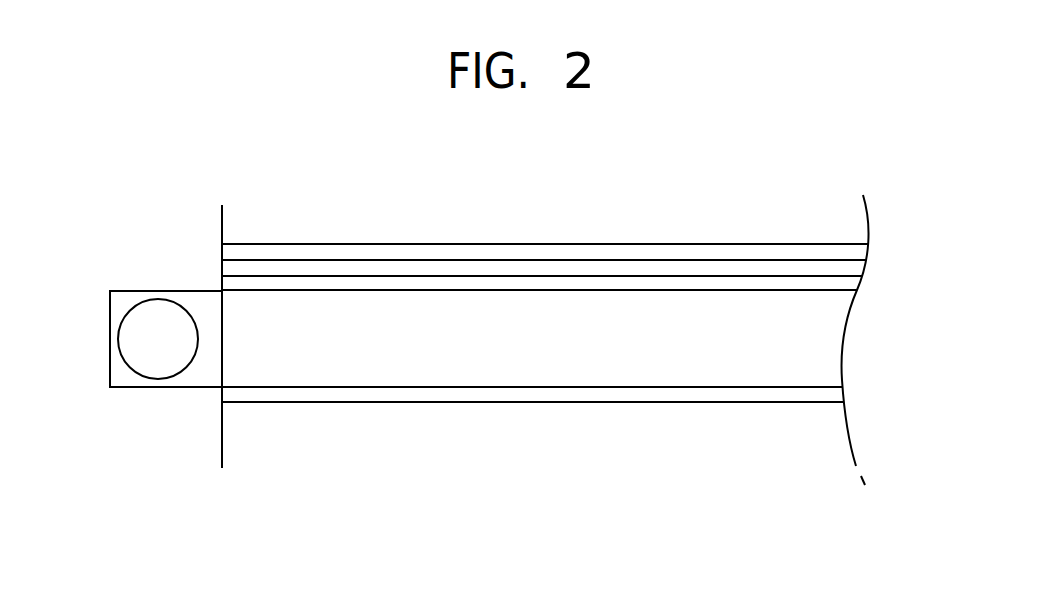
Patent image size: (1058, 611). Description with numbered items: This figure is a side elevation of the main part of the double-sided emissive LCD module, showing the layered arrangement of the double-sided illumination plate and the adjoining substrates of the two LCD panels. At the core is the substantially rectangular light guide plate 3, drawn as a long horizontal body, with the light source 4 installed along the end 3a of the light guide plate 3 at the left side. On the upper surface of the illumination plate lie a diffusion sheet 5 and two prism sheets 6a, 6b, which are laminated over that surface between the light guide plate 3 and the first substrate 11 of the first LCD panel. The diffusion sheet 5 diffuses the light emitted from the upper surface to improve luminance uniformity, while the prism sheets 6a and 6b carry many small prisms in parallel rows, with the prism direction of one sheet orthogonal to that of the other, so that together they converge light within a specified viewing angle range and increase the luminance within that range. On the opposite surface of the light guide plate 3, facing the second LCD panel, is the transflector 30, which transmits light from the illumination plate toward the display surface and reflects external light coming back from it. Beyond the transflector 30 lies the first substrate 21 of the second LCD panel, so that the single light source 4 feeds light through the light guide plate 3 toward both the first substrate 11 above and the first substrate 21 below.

The light guide plate 3 is at (222, 373).
The end of the light guide plate 3a is at (222, 310).
The light source 4 is at (110, 353).
The diffusion sheet 5 is at (477, 283).
The prism sheet 6a is at (600, 270).
The prism sheet 6b is at (703, 253).
The first substrate 11 is at (813, 212).
The first substrate 21 is at (820, 457).
The transflector 30 is at (800, 397).